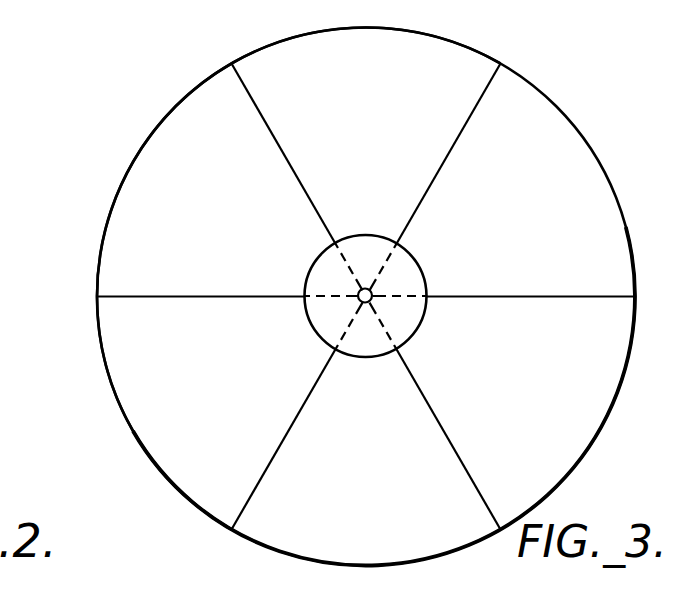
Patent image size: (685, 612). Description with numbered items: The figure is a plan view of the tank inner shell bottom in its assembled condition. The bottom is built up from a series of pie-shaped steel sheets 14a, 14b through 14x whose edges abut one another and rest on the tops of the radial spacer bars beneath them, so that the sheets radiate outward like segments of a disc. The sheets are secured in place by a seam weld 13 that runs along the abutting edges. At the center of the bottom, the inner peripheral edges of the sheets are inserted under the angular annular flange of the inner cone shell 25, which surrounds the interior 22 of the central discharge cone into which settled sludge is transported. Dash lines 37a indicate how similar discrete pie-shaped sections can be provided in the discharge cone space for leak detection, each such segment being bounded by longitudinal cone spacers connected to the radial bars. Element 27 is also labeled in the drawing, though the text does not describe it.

The seam weld 13 is at (250, 91).
The pie-shaped steel sheet 14a is at (173, 135).
The pie-shaped steel sheet 14b is at (448, 70).
The pie-shaped steel sheet 14x is at (155, 427).
The interior of the discharge cone 22 is at (327, 329).
The inner cone shell 25 is at (418, 265).
The hub ring 27 is at (305, 305).
The dash lines 37a is at (349, 268).